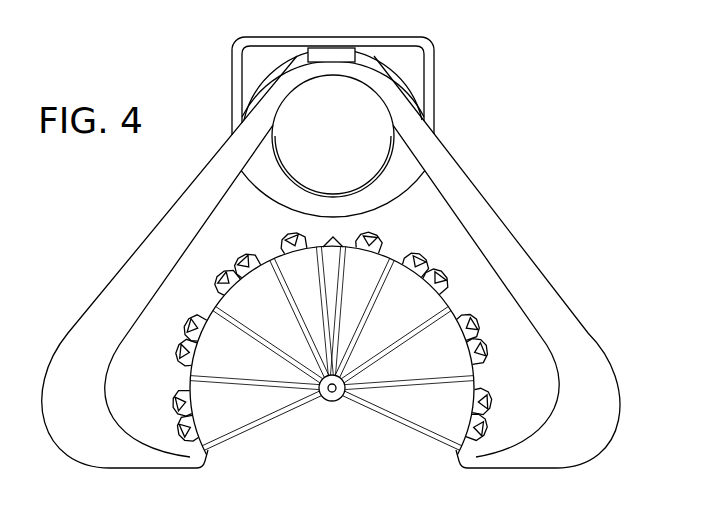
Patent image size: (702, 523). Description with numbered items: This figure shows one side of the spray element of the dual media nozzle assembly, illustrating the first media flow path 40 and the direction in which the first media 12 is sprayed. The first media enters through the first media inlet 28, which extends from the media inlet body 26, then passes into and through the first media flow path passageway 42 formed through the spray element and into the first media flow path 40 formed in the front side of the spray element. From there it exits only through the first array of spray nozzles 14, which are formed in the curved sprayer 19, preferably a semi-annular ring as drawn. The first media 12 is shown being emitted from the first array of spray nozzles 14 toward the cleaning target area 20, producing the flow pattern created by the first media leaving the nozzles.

The first media 12 is at (235, 346).
The first array of spray nozzles 14 is at (213, 308).
The curved sprayer 19 is at (190, 420).
The cleaning target area 20 is at (333, 402).
The media inlet body 26 is at (592, 422).
The first media inlet 28 is at (408, 42).
The first media flow path 40 is at (137, 403).
The first media flow path passageway 42 is at (360, 133).